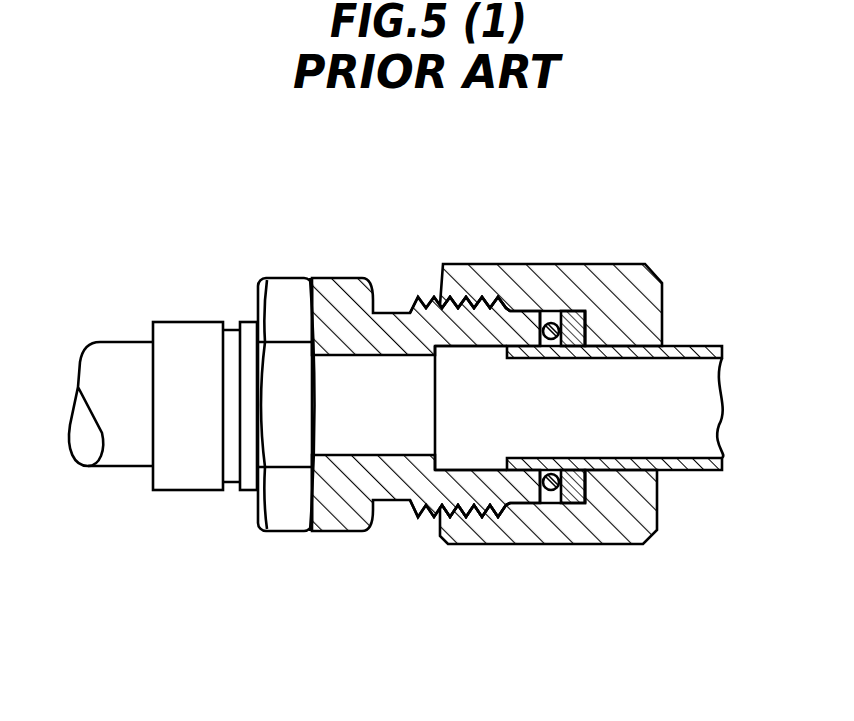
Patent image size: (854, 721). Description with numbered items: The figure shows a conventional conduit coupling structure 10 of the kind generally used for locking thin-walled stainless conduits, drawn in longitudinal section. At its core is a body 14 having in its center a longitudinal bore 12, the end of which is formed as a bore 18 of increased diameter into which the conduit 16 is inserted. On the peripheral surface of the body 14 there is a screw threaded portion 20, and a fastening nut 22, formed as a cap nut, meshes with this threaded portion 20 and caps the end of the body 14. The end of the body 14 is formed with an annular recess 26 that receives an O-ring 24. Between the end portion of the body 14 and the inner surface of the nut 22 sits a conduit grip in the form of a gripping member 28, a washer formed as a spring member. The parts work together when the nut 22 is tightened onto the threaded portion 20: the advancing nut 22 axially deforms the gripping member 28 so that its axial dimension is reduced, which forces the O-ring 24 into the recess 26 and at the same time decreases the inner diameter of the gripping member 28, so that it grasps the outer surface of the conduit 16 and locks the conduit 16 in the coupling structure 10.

The structure 10 is at (318, 233).
The longitudinal bore 12 is at (350, 354).
The body 14 is at (323, 533).
The conduit 16 is at (704, 476).
The bore 18 is at (482, 458).
The screw threaded portion 20 is at (428, 518).
The fastening nut 22 is at (503, 270).
The O-ring 24 is at (568, 322).
The annular recess 26 is at (543, 502).
The gripping member 28 is at (580, 503).